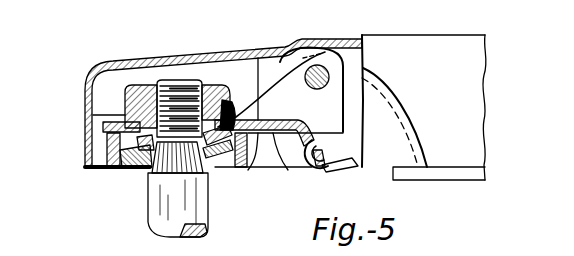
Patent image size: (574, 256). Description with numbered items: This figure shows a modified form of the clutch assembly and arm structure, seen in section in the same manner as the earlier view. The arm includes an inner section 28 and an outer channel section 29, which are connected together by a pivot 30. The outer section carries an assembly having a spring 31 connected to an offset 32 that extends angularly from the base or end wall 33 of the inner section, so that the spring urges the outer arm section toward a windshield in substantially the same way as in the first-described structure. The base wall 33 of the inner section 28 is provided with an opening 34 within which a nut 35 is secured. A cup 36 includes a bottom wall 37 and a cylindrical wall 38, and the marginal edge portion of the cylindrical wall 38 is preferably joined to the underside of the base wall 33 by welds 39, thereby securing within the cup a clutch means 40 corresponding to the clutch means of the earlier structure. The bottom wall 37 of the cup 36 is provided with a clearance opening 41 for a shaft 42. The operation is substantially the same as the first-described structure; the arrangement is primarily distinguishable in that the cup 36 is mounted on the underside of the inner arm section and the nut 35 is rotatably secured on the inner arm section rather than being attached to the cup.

The inner section 28 is at (248, 110).
The outer channel section 29 is at (447, 47).
The pivot 30 is at (330, 80).
The spring 31 is at (348, 172).
The offset 32 is at (288, 165).
The base or end wall 33 is at (110, 117).
The opening 34 is at (115, 115).
The nut 35 is at (133, 87).
The cup 36 is at (100, 168).
The bottom wall 37 is at (130, 170).
The cylindrical wall 38 is at (107, 151).
The welds 39 is at (273, 132).
The clutch means 40 is at (220, 173).
The clearance opening 41 is at (147, 168).
The shaft 42 is at (208, 220).